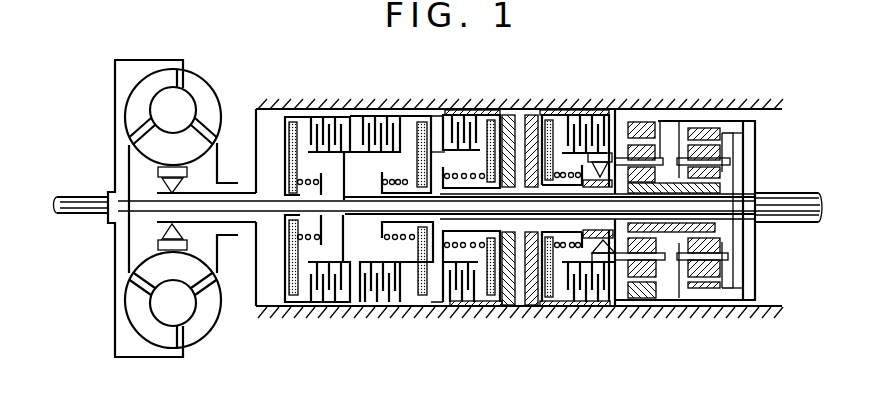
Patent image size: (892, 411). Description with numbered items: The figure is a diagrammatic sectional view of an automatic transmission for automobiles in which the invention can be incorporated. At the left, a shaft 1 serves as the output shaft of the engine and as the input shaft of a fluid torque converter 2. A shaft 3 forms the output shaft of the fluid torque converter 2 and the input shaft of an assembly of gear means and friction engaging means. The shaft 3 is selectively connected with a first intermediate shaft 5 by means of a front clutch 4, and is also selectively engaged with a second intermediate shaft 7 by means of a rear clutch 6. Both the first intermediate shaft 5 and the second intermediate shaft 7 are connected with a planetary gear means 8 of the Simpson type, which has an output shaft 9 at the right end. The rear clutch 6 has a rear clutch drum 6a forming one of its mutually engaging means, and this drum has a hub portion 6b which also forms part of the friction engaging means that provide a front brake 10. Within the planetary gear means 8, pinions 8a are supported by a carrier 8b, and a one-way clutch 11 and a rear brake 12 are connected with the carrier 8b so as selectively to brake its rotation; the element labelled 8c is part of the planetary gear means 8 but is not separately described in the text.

The shaft 1 is at (88, 198).
The fluid torque converter 2 is at (157, 57).
The shaft 3 is at (271, 200).
The front clutch 4 is at (328, 122).
The first intermediate shaft 5 is at (373, 199).
The rear clutch 6 is at (382, 122).
The rear clutch drum 6a is at (417, 122).
The hub portion 6b is at (455, 157).
The second intermediate shaft 7 is at (437, 246).
The planetary gear means 8 is at (695, 121).
The pinions 8a is at (672, 262).
The carrier 8b is at (628, 262).
The ring gear 8c is at (718, 228).
The output shaft 9 is at (800, 193).
The front brake 10 is at (480, 120).
The one-way clutch 11 is at (613, 152).
The rear brake 12 is at (563, 122).